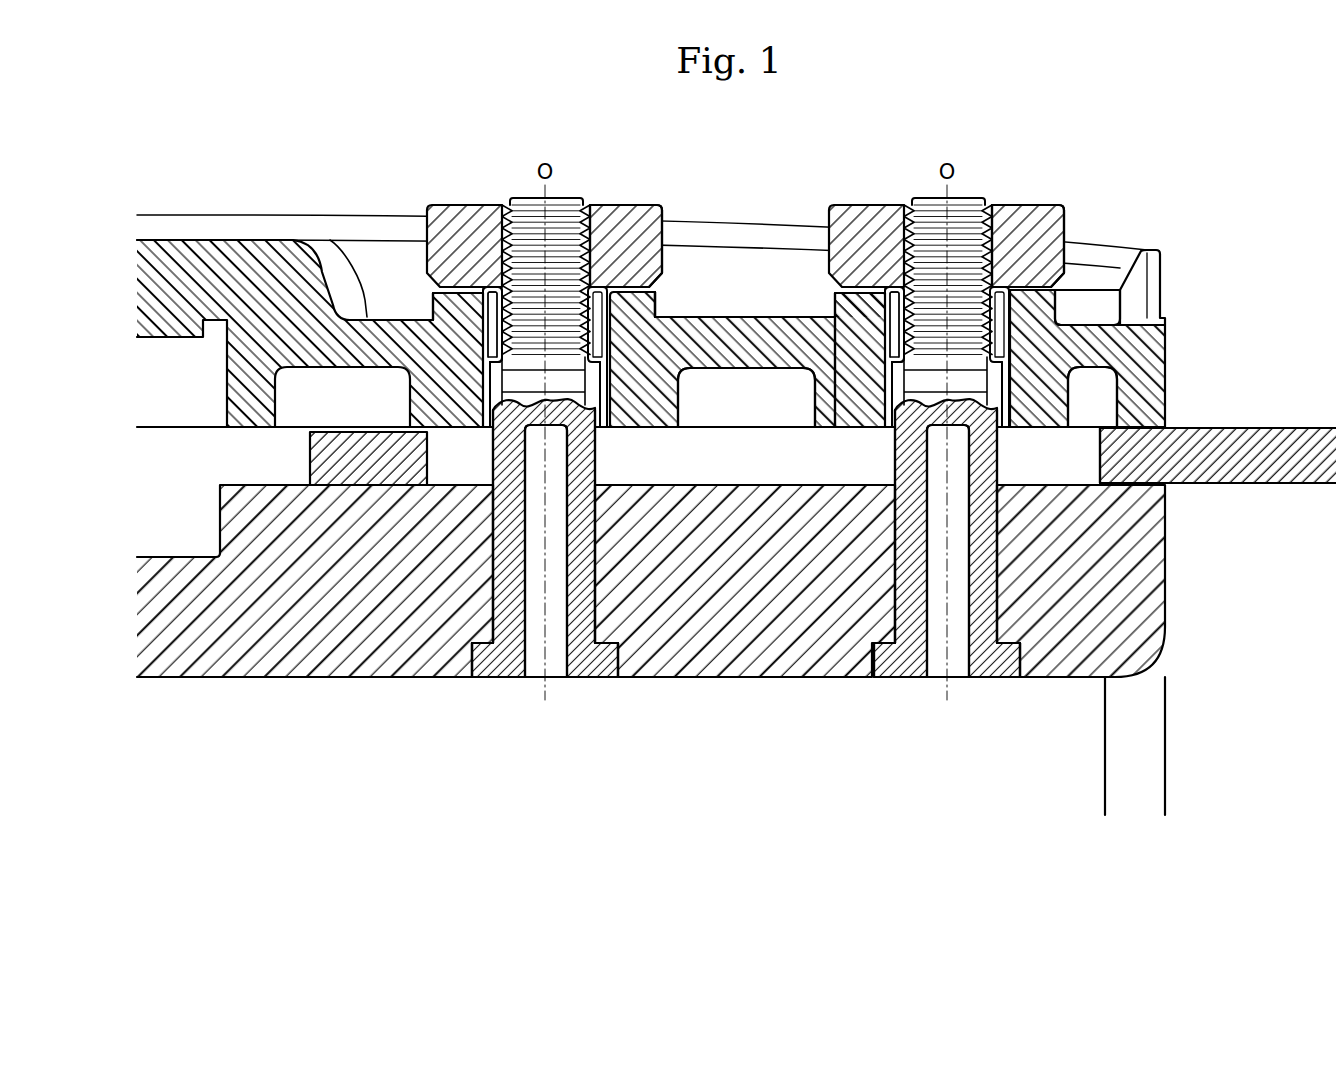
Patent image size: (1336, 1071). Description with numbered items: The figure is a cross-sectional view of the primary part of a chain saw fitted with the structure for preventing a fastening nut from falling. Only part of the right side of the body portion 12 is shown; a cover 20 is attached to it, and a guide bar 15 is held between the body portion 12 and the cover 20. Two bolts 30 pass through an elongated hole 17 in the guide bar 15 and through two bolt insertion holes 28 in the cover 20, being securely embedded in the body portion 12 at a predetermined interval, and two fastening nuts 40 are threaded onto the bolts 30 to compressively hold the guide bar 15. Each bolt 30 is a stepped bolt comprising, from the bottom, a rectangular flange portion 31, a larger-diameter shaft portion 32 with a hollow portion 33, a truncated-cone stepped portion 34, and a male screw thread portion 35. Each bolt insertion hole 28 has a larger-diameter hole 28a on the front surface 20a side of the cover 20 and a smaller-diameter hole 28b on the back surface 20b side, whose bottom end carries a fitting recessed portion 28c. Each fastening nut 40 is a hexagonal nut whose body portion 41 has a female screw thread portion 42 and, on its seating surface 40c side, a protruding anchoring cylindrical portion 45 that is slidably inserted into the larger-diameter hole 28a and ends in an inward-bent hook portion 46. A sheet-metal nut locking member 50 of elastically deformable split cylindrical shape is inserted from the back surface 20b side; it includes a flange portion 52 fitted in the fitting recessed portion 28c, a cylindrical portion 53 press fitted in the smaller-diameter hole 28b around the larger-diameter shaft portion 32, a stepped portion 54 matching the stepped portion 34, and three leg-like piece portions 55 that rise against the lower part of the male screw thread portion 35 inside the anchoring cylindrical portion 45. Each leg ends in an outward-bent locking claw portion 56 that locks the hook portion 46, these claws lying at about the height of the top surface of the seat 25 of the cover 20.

The body portion 12 is at (1170, 575).
The guide bar 15 is at (1238, 426).
The elongated hole 17 is at (1095, 465).
The cover 20 is at (240, 240).
The front surface 20a is at (642, 232).
The back surface 20b is at (250, 430).
The seat 25 is at (660, 303).
The bolt insertion hole 28 is at (614, 292).
The larger-diameter hole 28a is at (834, 291).
The smaller-diameter hole 28b is at (612, 428).
The fitting recessed portion 28c is at (483, 430).
The bolt 30 is at (492, 553).
The rectangular flange portion 31 is at (605, 680).
The larger-diameter shaft portion 32 is at (597, 560).
The hollow portion 33 is at (530, 605).
The stepped portion 34 is at (662, 375).
The male screw thread portion 35 is at (594, 248).
The fastening nut 40 is at (632, 205).
The body portion 41 is at (827, 246).
The seating surface 40c is at (432, 296).
The female screw thread portion 42 is at (528, 210).
The anchoring cylindrical portion 45 is at (837, 319).
The hook portion 46 is at (488, 362).
The nut locking member 50 is at (486, 412).
The flange portion 52 is at (602, 430).
The cylindrical portion 53 is at (604, 383).
The stepped portion 54 is at (488, 383).
The leg-like piece portions 55 is at (482, 333).
The locking claw portion 56 is at (485, 290).